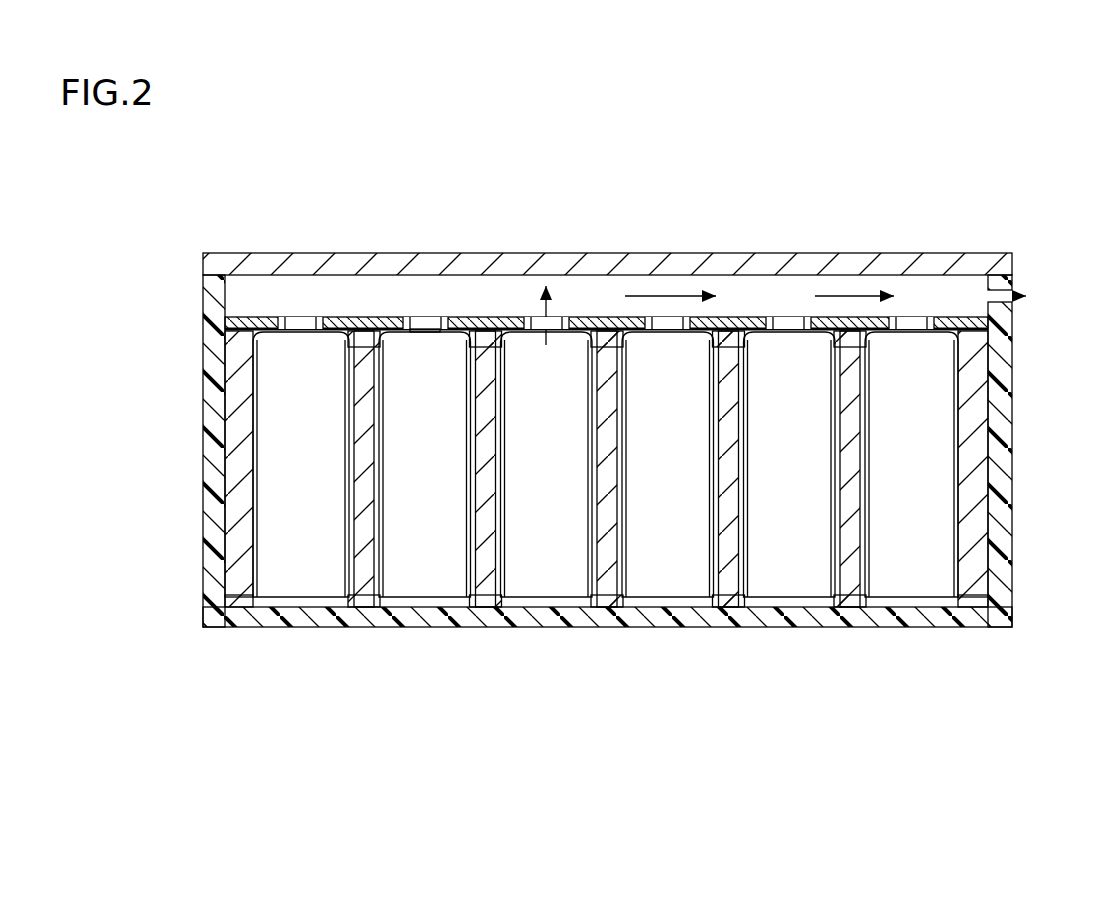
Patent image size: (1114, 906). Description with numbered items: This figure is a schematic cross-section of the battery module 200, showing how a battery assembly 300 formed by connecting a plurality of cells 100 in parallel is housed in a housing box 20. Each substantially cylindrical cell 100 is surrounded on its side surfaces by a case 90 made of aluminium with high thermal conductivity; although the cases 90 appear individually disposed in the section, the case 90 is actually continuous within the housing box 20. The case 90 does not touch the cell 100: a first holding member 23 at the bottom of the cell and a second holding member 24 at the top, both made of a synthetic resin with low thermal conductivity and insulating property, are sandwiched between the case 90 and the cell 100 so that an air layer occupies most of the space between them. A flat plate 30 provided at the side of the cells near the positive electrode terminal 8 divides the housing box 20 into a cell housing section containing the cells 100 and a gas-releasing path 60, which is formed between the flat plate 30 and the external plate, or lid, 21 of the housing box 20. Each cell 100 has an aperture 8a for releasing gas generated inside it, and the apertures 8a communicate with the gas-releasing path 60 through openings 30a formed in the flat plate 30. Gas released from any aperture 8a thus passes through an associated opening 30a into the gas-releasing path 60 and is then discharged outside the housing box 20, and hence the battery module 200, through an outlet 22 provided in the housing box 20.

The battery module 200 is at (929, 200).
The housing box 20 is at (1013, 433).
The external plate 21 is at (243, 266).
The outlet 22 is at (1018, 288).
The first holding member 23 is at (370, 600).
The second holding member 24 is at (365, 318).
The flat plate 30 is at (605, 316).
The opening 30a is at (446, 318).
The positive electrode terminal 8 is at (431, 318).
The aperture 8a is at (425, 330).
The gas-releasing path 60 is at (771, 298).
The case 90 is at (363, 578).
The cell 100 is at (912, 565).
The battery assembly 300 is at (248, 489).